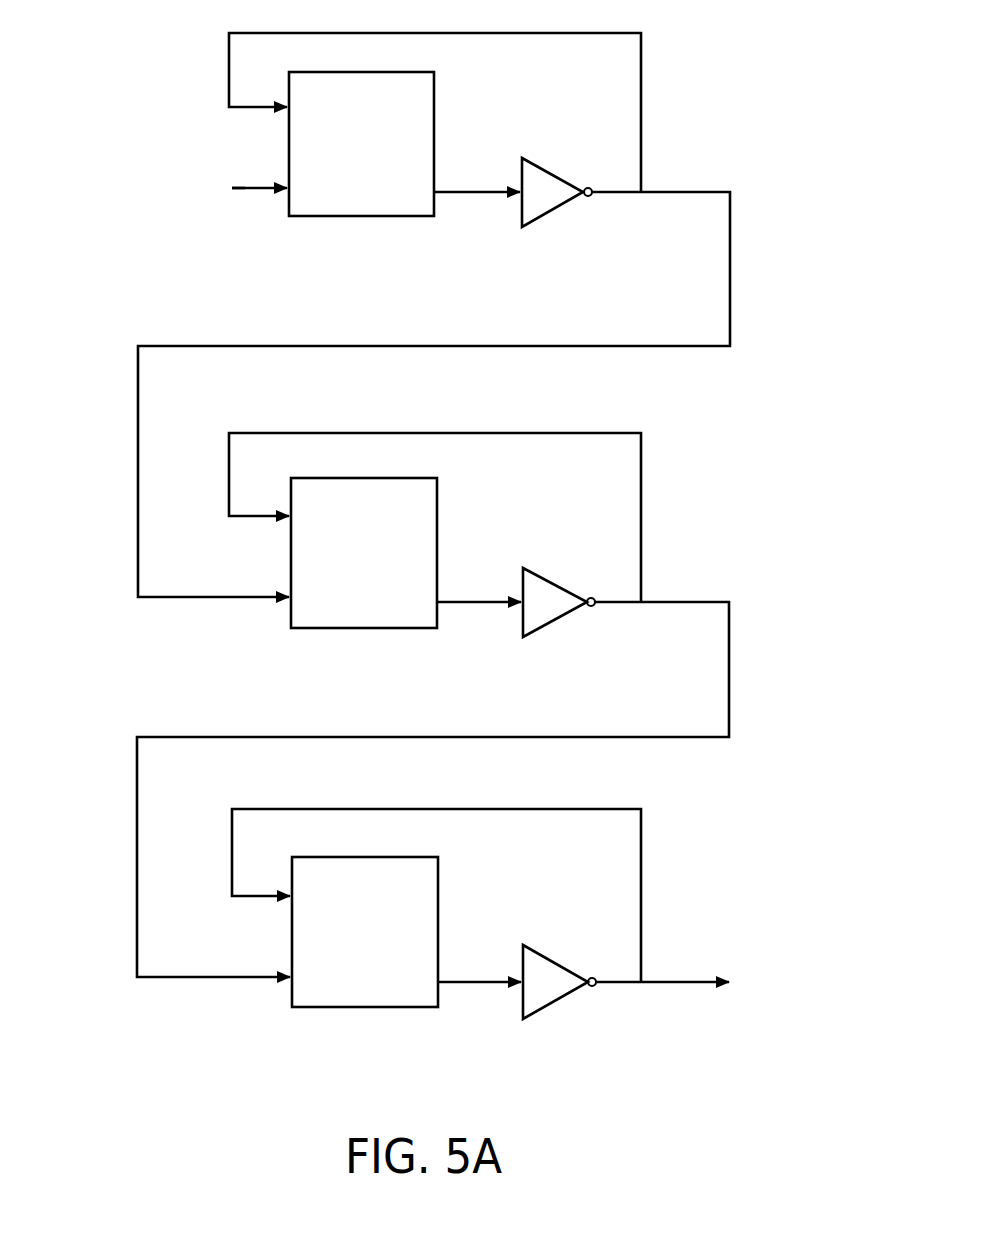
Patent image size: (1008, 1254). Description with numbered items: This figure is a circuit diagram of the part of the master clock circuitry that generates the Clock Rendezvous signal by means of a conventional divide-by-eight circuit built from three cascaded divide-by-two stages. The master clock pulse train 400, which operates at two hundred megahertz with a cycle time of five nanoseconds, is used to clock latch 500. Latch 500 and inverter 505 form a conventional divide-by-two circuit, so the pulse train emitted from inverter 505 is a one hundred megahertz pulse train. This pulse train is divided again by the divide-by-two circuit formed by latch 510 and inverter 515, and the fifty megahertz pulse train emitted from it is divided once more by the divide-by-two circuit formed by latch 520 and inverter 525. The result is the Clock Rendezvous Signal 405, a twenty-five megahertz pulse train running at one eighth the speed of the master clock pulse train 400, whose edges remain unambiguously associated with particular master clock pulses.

The master clock pulse train 400 is at (128, 208).
The Clock Rendezvous Signal 405 is at (774, 975).
The latch 500 is at (434, 92).
The inverter 505 is at (551, 209).
The latch 510 is at (437, 497).
The inverter 515 is at (548, 634).
The latch 520 is at (438, 871).
The inverter 525 is at (548, 1011).